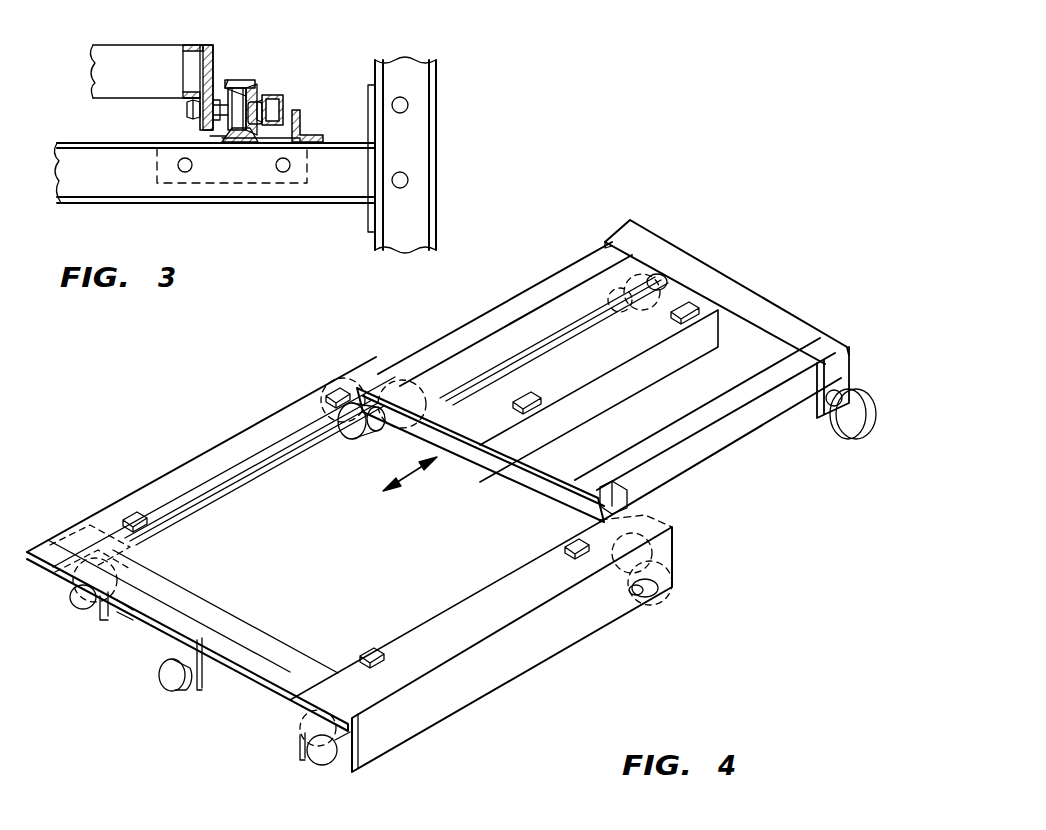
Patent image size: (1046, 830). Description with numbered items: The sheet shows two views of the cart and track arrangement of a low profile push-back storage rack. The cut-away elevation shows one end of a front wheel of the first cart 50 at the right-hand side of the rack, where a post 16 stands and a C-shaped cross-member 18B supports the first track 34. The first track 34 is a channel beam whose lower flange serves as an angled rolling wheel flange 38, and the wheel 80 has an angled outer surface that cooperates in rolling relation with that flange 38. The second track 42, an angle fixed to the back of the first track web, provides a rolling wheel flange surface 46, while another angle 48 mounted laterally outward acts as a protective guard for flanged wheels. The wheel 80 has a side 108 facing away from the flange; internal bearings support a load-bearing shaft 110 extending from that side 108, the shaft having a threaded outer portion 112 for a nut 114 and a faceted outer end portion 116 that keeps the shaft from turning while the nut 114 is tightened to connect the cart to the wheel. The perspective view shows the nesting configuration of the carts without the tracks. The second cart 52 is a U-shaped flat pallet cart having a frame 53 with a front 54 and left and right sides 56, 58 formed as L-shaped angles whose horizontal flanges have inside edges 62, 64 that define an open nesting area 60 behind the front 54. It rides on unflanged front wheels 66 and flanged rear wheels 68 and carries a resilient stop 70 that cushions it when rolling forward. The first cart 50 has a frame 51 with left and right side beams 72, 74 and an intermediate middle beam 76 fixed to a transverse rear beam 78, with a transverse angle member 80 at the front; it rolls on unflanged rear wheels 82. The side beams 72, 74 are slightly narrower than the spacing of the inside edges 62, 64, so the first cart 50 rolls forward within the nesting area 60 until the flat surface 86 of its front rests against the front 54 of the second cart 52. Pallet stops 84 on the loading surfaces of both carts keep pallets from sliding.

In FIG. 3, the post 16 is at (440, 126).
In FIG. 3, the cross-member 18B is at (76, 142).
In FIG. 3, the first track 34 is at (238, 70).
In FIG. 3, the rolling wheel flange 38 is at (266, 130).
In FIG. 3, the second track 42 is at (274, 96).
In FIG. 3, the rolling wheel flange surface 46 is at (276, 110).
In FIG. 3, the angle 48 is at (301, 126).
In FIG. 3, the first cart 50 is at (186, 38).
In FIG. 4, the first cart 50 is at (712, 236).
In FIG. 4, the frame 51 is at (794, 303).
In FIG. 4, the second cart 52 is at (211, 444).
In FIG. 4, the frame 53 is at (500, 647).
In FIG. 4, the front 54 is at (166, 623).
In FIG. 4, the left side 56 is at (160, 468).
In FIG. 4, the right side 58 is at (484, 635).
In FIG. 4, the nesting area 60 is at (331, 566).
In FIG. 4, the inside edge 62 is at (192, 502).
In FIG. 4, the inside edge 64 is at (408, 630).
In FIG. 4, the front wheels 66 is at (80, 608).
In FIG. 4, the rear wheels 68 is at (374, 438).
In FIG. 4, the stop 70 is at (162, 676).
In FIG. 4, the left side beam 72 is at (530, 286).
In FIG. 4, the right side beam 74 is at (741, 393).
In FIG. 4, the intermediate middle beam 76 is at (618, 406).
In FIG. 4, the transverse rear beam 78 is at (742, 305).
In FIG. 3, the transverse angle member / front wheel 80 is at (240, 86).
In FIG. 4, the transverse angle member / front wheel 80 is at (450, 397).
In FIG. 4, the rear wheels 82 is at (634, 306).
In FIG. 4, the pallet stops 84 is at (122, 514).
In FIG. 4, the flat surface 86 is at (562, 523).
In FIG. 3, the side 108 is at (200, 82).
In FIG. 3, the load-bearing shaft 110 is at (212, 142).
In FIG. 3, the outer portion 112 is at (192, 115).
In FIG. 3, the nut 114 is at (196, 108).
In FIG. 3, the outer end portion 116 is at (186, 98).